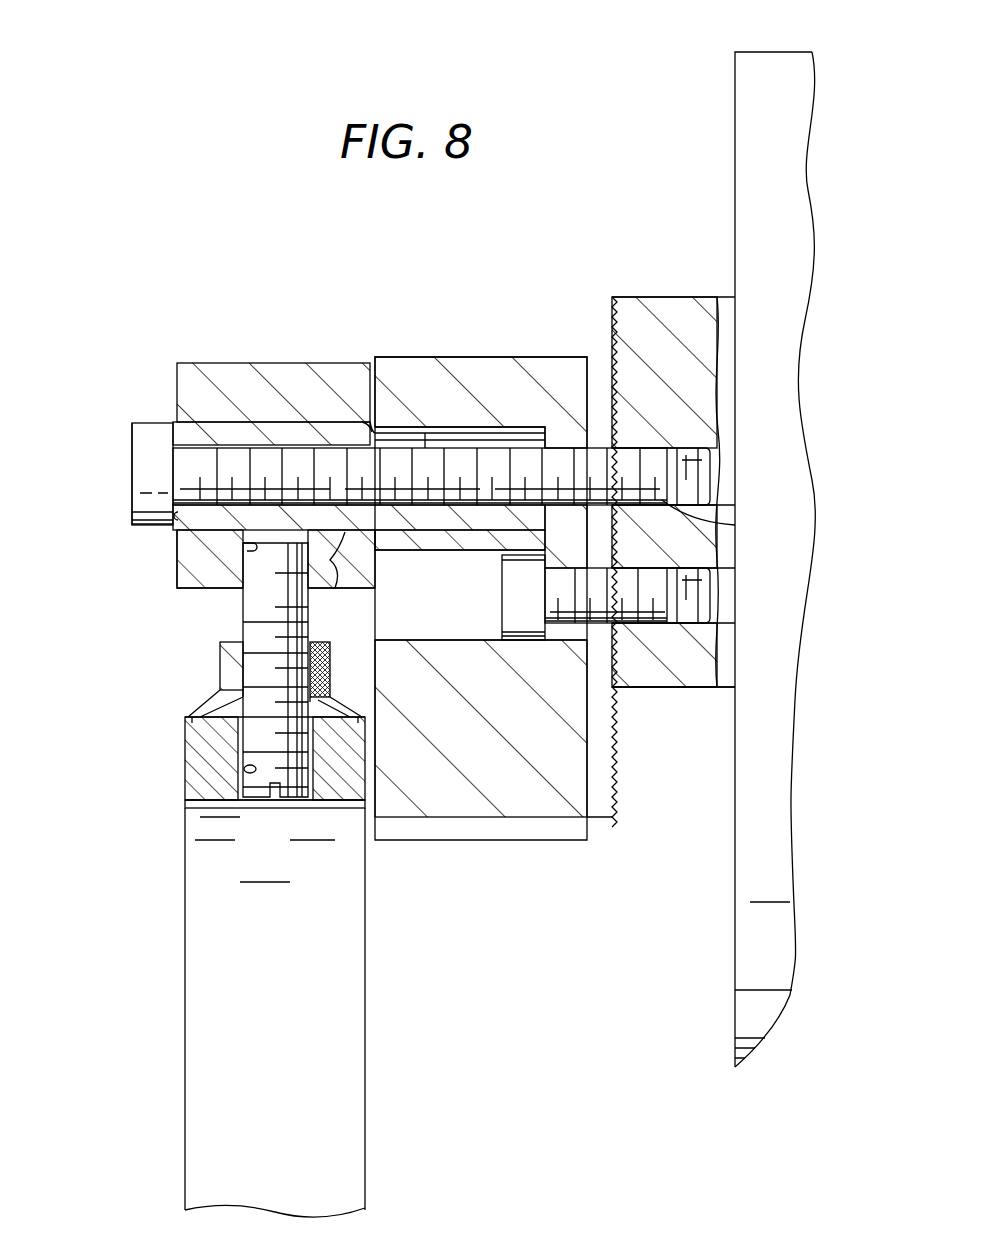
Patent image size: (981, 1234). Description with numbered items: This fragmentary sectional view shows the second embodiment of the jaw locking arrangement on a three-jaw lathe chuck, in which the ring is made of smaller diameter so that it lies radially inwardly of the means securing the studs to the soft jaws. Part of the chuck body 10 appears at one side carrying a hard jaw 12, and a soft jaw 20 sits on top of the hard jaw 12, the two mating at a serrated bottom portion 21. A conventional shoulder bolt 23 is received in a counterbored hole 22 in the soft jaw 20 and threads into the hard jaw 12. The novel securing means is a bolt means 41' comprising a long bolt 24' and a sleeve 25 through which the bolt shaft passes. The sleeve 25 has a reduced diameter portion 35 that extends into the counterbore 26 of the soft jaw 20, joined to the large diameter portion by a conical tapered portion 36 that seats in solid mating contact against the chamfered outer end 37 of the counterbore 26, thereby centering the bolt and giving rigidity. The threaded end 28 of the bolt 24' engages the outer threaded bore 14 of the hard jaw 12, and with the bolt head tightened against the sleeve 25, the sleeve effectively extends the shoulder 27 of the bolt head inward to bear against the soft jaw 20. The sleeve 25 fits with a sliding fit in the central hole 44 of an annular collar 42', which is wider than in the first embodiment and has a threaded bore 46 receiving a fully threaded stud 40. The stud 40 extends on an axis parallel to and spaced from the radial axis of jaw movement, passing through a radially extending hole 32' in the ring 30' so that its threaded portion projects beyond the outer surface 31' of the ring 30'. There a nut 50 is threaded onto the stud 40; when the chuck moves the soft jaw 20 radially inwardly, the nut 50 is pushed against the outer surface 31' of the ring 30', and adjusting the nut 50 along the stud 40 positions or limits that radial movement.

The chuck body 10 is at (805, 62).
The hard jaw 12 is at (683, 305).
The outer threaded bore 14 is at (705, 455).
The soft jaw 20 is at (520, 357).
The serrated bottom portion 21 is at (635, 663).
The counterbored hole 22 is at (557, 448).
The shoulder bolt 23 is at (512, 607).
The long bolt 24' is at (141, 447).
The sleeve 25 is at (247, 422).
The counterbore 26 is at (455, 528).
The shoulder 27 is at (135, 521).
The threaded end 28 is at (712, 528).
The ring 30' is at (245, 1008).
The outer surface 31' is at (238, 758).
The radially extending hole 32' is at (184, 786).
The reduced diameter portion 35 is at (400, 438).
The conical tapered portion 36 is at (396, 540).
The chamfered outer end 37 is at (367, 420).
The stud 40 is at (265, 800).
The bolt means 41' is at (105, 464).
The annular collar 42' is at (246, 572).
The central hole 44 is at (310, 422).
The threaded bore 46 is at (246, 546).
The nut 50 is at (232, 662).